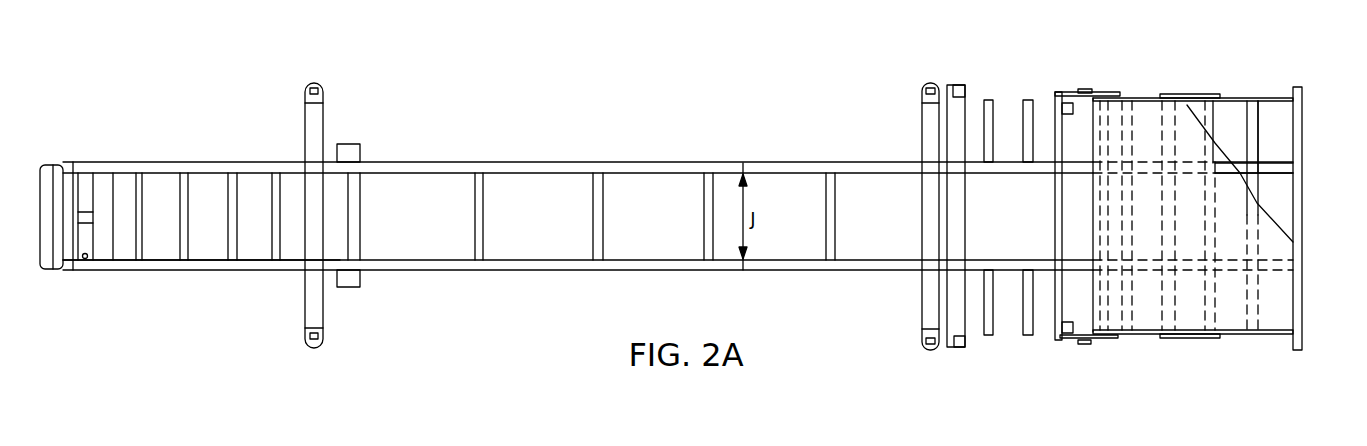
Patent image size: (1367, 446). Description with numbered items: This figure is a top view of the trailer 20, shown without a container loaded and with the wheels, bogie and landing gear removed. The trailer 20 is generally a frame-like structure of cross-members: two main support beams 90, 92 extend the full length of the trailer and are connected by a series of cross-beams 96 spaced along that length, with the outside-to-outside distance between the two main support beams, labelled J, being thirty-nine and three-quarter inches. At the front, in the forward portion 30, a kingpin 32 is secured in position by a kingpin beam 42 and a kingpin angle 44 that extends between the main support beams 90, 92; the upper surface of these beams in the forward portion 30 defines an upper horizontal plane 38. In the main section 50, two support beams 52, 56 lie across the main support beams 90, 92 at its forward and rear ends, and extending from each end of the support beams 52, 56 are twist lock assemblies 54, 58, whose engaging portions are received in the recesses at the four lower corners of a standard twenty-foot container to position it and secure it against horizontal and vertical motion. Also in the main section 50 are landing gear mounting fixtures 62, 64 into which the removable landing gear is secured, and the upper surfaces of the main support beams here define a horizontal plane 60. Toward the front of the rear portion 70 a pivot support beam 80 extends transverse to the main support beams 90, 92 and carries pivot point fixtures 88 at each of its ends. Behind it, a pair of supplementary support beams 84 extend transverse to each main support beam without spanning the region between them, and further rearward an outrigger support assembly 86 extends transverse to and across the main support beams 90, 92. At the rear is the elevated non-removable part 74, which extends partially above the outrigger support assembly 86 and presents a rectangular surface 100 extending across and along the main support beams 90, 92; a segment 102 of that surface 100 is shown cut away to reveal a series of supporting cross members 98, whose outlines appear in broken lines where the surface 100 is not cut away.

The trailer 20 is at (720, 76).
The forward portion 30 is at (195, 92).
The kingpin 32 is at (90, 212).
The upper horizontal plane 38 is at (200, 268).
The kingpin beam 42 is at (105, 254).
The kingpin angle 44 is at (67, 254).
The main section 50 is at (607, 107).
The support beam 52 is at (320, 124).
The twist lock assembly 54 is at (318, 85).
The support beam 56 is at (928, 131).
The twist lock assembly 58 is at (929, 84).
The horizontal plane 60 is at (523, 185).
The landing gear mounting fixture 62 is at (350, 290).
The landing gear mounting fixture 64 is at (358, 151).
The rear portion 70 is at (1148, 56).
The elevated non-removable part 74 is at (1225, 128).
The pivot support beam 80 is at (950, 85).
The supplementary support beams 84 is at (1030, 100).
The outrigger support assembly 86 is at (1068, 111).
The pivot point fixtures 88 is at (964, 91).
The main support beam 90 is at (423, 272).
The main support beam 92 is at (445, 166).
The cross-beams 96 is at (180, 214).
The supporting cross members 98 is at (1103, 223).
The rectangular surface 100 is at (1148, 115).
The segment 102 is at (1275, 148).